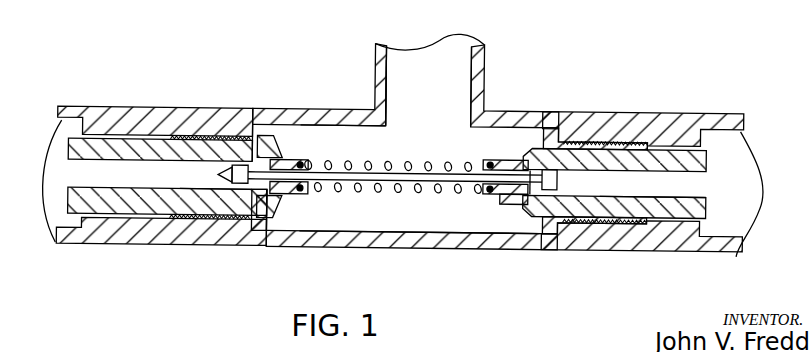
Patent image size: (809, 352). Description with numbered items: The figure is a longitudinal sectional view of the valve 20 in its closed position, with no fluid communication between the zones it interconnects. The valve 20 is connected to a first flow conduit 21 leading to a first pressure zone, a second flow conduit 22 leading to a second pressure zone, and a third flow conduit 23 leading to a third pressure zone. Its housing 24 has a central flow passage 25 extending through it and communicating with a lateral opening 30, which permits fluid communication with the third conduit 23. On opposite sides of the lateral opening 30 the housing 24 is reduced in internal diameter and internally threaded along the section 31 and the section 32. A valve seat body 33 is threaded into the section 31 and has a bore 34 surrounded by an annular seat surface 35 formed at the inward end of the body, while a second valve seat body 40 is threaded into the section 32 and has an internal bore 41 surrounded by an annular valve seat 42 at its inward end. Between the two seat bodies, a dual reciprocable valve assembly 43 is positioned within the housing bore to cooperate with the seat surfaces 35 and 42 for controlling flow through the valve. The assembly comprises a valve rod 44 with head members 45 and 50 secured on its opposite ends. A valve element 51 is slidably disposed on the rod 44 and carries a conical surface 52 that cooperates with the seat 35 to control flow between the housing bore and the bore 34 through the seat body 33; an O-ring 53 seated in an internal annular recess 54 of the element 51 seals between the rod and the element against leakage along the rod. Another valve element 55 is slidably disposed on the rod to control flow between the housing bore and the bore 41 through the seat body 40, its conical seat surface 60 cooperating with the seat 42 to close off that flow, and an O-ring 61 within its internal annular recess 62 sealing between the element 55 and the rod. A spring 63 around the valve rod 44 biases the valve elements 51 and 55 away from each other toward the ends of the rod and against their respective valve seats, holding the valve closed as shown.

The valve 20 is at (137, 100).
The first flow conduit 21 is at (80, 242).
The second flow conduit 22 is at (733, 243).
The third flow conduit 23 is at (478, 49).
The housing 24 is at (328, 118).
The central flow passage 25 is at (357, 151).
The lateral opening 30 is at (387, 105).
The internally threaded section 31 is at (172, 121).
The internally threaded section 32 is at (636, 125).
The valve seat body 33 is at (120, 206).
The bore 34 is at (193, 185).
The annular seat surface 35 is at (288, 155).
The valve seat body 40 is at (610, 210).
The internal bore 41 is at (657, 190).
The annular valve seat 42 is at (543, 141).
The dual reciprocable valve assembly 43 is at (390, 192).
The valve rod 44 is at (356, 181).
The head member 45 is at (217, 179).
The head member 50 is at (559, 181).
The valve element 51 is at (277, 195).
The conical surface 52 is at (254, 152).
The O-ring 53 is at (300, 163).
The internal annular recess 54 is at (300, 195).
The valve element 55 is at (515, 212).
The conical seat surface 60 is at (532, 203).
The O-ring 61 is at (497, 196).
The internal annular recess 62 is at (488, 159).
The spring 63 is at (420, 190).